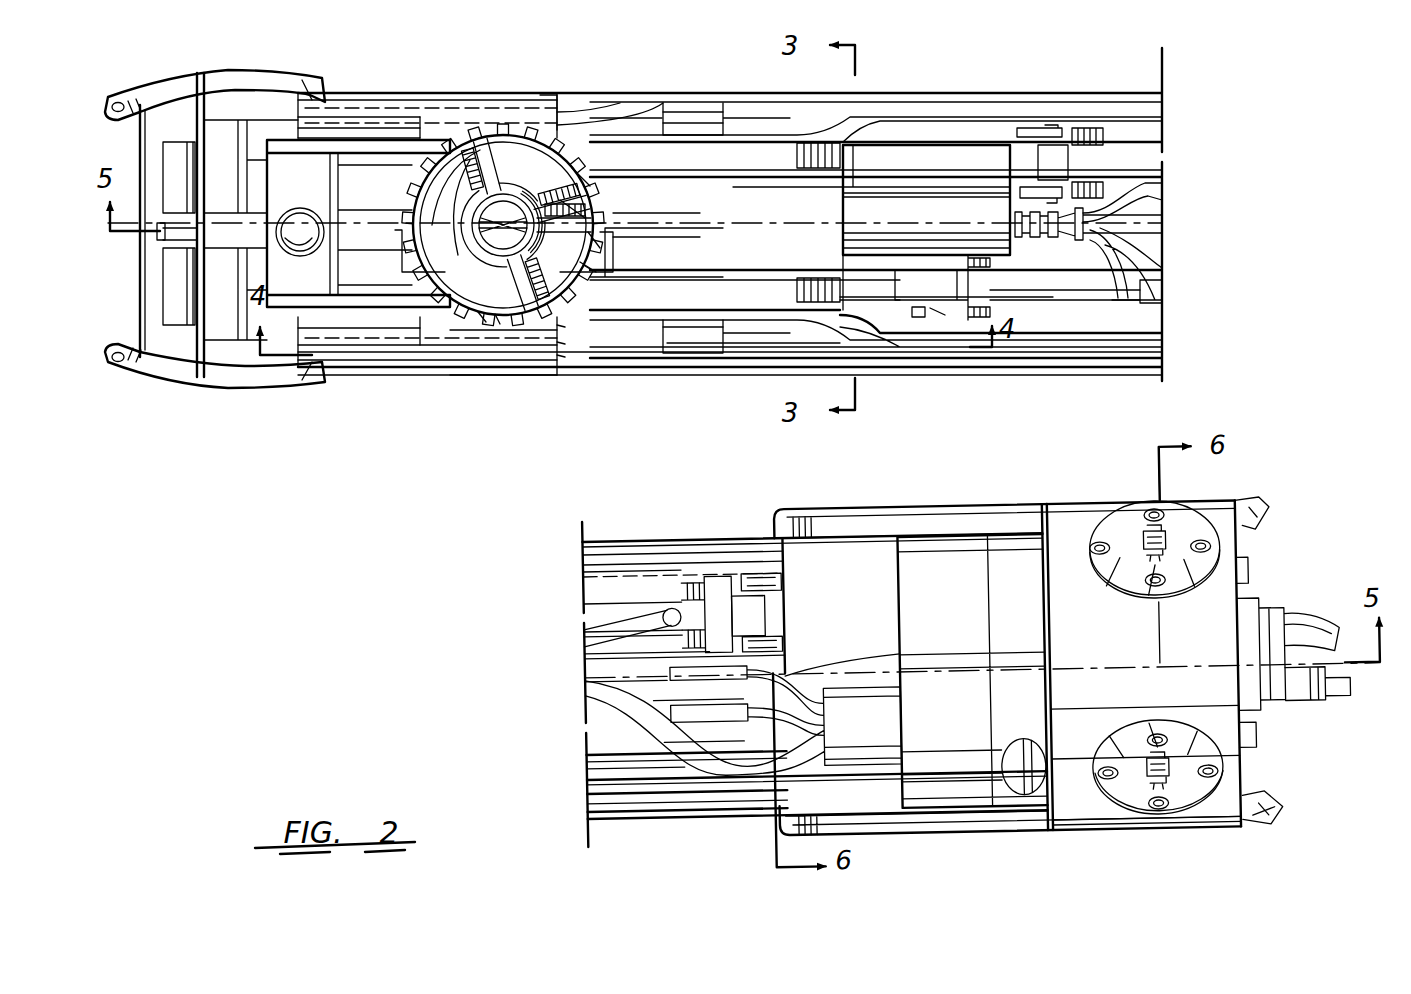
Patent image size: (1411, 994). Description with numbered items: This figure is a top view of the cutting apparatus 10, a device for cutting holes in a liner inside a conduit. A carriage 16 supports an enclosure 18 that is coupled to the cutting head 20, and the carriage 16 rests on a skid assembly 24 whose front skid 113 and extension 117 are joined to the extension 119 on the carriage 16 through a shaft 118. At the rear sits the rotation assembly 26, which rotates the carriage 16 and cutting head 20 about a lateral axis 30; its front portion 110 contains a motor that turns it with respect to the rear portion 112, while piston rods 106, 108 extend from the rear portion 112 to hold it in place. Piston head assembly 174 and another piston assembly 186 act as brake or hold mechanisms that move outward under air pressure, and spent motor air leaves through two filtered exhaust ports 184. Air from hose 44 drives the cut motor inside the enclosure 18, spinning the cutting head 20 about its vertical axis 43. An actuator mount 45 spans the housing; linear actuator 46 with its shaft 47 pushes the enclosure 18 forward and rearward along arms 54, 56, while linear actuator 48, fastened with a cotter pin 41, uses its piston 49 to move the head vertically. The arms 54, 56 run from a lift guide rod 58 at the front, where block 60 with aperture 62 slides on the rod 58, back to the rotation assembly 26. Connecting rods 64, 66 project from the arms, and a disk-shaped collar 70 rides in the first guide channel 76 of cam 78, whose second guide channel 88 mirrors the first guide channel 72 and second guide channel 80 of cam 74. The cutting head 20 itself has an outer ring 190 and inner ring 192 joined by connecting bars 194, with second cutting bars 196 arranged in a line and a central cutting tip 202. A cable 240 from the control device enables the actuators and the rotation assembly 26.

The cutting apparatus 10 is at (563, 459).
The carriage 16 is at (577, 368).
The enclosure 18 is at (708, 150).
The cutting head 20 is at (522, 132).
The skid assembly 24 is at (206, 70).
The rotation assembly 26 is at (1070, 530).
The axis 30 is at (716, 224).
The cotter pin 41 is at (752, 572).
The vertical axis 43 is at (480, 208).
The hose 44 is at (1332, 697).
The actuator mount 45 is at (748, 575).
The linear actuator 46 is at (1105, 140).
The shaft 47 is at (963, 150).
The linear actuator 48 is at (1052, 297).
The piston 49 is at (953, 300).
The arm 54 is at (640, 315).
The arm 56 is at (645, 140).
The lift guide rod 58 is at (303, 247).
The block 60 is at (298, 140).
The aperture 62 is at (330, 240).
The connecting rod 64 is at (497, 324).
The connecting rod 66 is at (448, 135).
The disk-shaped collar 70 is at (482, 322).
The first guide channel 72 is at (557, 355).
The cam 74 is at (557, 342).
The first guide channel 76 is at (545, 105).
The cam 78 is at (560, 115).
The second guide channel 80 is at (557, 325).
The second guide channel 88 is at (600, 112).
The piston rod 106 is at (1166, 784).
The piston rod 108 is at (1170, 545).
The front portion 110 is at (990, 802).
The rear portion 112 is at (1140, 830).
The front skid 113 is at (250, 374).
The extension 117 is at (170, 165).
The shaft 118 is at (160, 240).
The extension 119 is at (222, 128).
The piston head assembly 174 is at (1168, 535).
The filtered exhaust ports 184 is at (1252, 574).
The piston assembly 186 is at (1125, 752).
The outer ring 190 is at (560, 208).
The inner ring 192 is at (585, 182).
The connecting bars 194 is at (598, 242).
The second cutting bars 196 is at (600, 268).
The cutting tip 202 is at (495, 225).
The cable 240 is at (1306, 632).